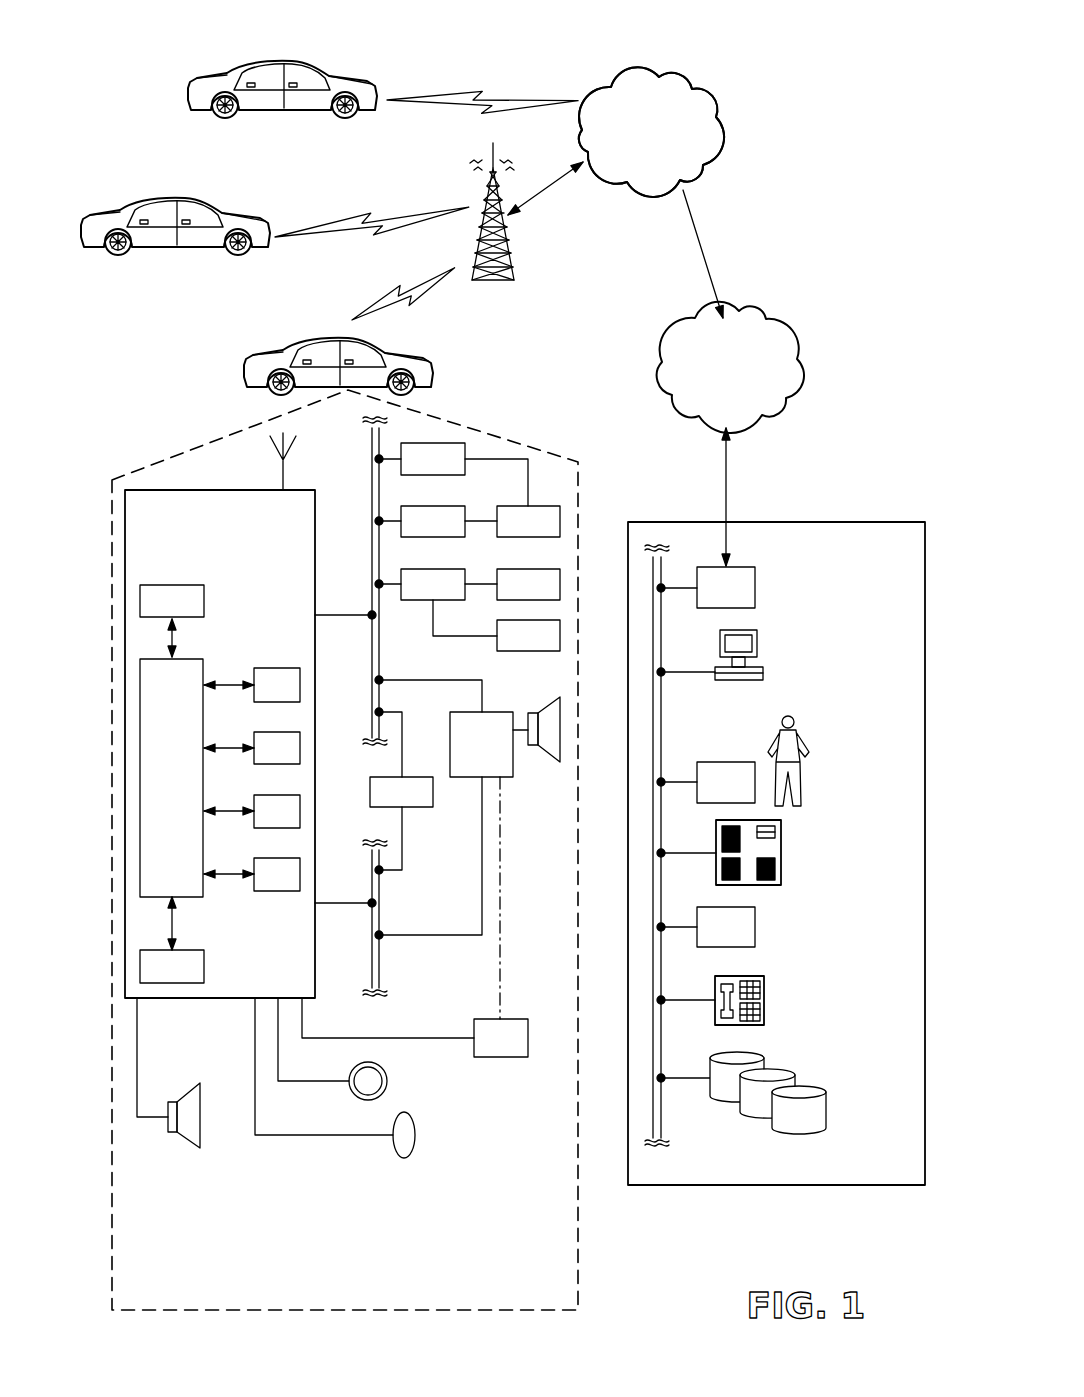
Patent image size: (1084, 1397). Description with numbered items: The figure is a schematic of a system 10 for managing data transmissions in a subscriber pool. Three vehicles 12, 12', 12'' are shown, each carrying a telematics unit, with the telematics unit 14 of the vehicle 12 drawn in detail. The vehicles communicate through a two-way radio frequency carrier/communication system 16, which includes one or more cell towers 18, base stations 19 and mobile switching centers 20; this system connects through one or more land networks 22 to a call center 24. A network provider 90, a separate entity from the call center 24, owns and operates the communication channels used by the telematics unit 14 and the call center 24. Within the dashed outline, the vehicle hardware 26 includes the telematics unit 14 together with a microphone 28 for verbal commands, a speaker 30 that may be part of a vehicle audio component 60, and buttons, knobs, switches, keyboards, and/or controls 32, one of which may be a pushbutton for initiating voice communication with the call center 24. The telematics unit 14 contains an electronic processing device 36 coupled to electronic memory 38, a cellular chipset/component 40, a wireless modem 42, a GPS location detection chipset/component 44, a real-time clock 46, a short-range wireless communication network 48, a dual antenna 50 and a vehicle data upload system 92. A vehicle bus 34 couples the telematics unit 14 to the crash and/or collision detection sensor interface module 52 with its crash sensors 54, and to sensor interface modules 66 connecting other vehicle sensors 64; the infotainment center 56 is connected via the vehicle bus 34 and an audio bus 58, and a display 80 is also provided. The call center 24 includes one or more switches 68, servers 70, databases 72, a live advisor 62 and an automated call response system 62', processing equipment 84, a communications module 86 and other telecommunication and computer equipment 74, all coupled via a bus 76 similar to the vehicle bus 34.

The system 10 is at (810, 180).
The vehicle 12 is at (338, 338).
The vehicle 12' is at (175, 198).
The vehicle 12'' is at (282, 60).
The telematics unit 14 is at (316, 718).
The carrier/communication system 16 is at (575, 200).
The cell tower 18 is at (482, 207).
The base station 19 is at (651, 132).
The mobile switching center 20 is at (651, 132).
The land network 22 is at (730, 434).
The call center 24 is at (776, 1185).
The vehicle hardware 26 is at (330, 1311).
The microphone 28 is at (415, 1135).
The speaker 30 is at (188, 1150).
The buttons, knobs, switches, keyboards, and/or controls 32 is at (388, 1081).
The vehicle bus 34 is at (379, 665).
The electronic processing device 36 is at (171, 778).
The electronic memory 38 is at (172, 966).
The cellular chipset/component 40 is at (172, 601).
The wireless modem 42 is at (277, 685).
The location detection chipset/component 44 is at (277, 748).
The real-time clock 46 is at (277, 811).
The short-range wireless communication network 48 is at (277, 874).
The dual antenna 50 is at (283, 478).
The crash and/or collision detection sensor interface module 52 is at (433, 522).
The crash sensor 54 is at (528, 522).
The infotainment center 56 is at (401, 792).
The audio bus 58 is at (370, 920).
The vehicle audio component 60 is at (505, 737).
The live advisor 62 is at (814, 743).
The automated call response system 62' is at (758, 641).
The vehicle sensor 64 is at (528, 585).
The sensor interface module 66 is at (433, 585).
The switch 68 is at (706, 587).
The server 70 is at (782, 853).
The database 72 is at (828, 1108).
The telecommunication and computer equipment 74 is at (765, 1000).
The bus 76 is at (662, 1112).
The display 80 is at (415, 1027).
The processing equipment 84 is at (706, 782).
The communications module 86 is at (626, 783).
The network provider 90 is at (643, 254).
The vehicle data upload system 92 is at (433, 459).